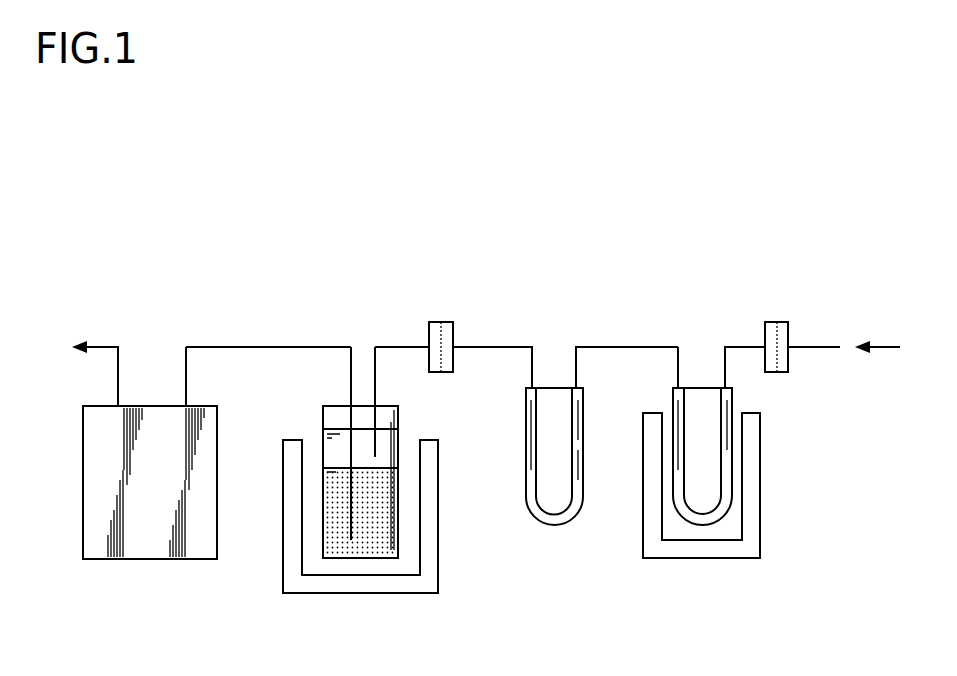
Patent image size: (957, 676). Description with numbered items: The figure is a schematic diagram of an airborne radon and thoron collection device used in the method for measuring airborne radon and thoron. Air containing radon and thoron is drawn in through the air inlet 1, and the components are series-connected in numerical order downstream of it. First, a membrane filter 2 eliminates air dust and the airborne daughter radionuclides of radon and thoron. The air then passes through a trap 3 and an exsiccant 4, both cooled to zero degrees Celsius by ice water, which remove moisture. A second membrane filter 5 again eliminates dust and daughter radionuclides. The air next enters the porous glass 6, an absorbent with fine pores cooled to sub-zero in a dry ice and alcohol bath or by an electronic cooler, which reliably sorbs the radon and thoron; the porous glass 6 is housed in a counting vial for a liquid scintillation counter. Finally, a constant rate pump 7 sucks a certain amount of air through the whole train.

The air inlet 1 is at (877, 335).
The membrane filter 2 is at (762, 310).
The trap 3 is at (682, 536).
The exsiccant 4 is at (540, 538).
The membrane filter 5 is at (466, 315).
The porous glass 6 is at (378, 548).
The constant rate pump 7 is at (176, 530).